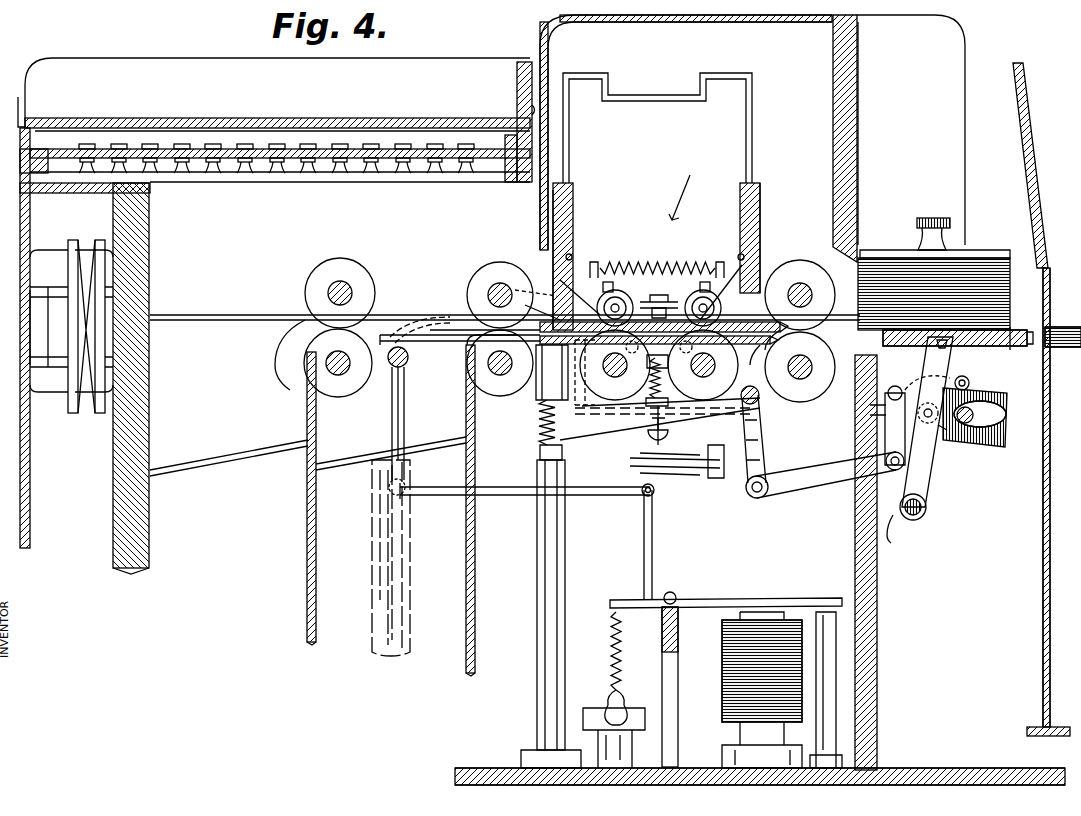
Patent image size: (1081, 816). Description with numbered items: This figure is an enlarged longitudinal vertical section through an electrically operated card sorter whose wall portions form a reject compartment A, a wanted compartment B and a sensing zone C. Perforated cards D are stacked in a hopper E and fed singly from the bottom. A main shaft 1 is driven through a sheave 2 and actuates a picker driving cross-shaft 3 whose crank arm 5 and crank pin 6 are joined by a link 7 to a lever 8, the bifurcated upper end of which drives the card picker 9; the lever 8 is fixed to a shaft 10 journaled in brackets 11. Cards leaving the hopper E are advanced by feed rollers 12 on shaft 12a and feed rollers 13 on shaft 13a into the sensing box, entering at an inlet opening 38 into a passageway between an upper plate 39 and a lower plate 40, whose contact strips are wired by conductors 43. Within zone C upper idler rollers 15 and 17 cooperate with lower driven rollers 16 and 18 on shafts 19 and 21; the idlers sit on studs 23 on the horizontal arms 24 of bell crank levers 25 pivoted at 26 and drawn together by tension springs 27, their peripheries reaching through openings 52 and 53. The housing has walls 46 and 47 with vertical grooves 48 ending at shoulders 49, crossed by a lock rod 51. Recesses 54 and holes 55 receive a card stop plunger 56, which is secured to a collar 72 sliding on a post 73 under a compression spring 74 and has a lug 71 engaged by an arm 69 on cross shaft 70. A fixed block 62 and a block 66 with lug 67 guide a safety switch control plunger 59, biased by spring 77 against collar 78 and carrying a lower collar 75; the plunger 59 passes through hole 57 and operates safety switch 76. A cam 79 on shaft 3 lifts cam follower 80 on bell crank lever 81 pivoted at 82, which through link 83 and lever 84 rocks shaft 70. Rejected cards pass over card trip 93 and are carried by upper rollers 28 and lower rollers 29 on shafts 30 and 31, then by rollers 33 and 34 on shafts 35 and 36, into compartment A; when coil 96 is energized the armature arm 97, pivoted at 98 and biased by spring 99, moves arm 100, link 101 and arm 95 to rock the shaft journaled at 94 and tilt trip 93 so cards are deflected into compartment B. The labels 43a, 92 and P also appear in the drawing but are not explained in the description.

The main shaft 1 is at (1068, 327).
The sheave 2 is at (68, 250).
The picker driving cross-shaft 3 is at (985, 430).
The crank arm 5 is at (972, 420).
The crank pin 6 is at (997, 416).
The link 7 is at (972, 400).
The lever 8 is at (925, 483).
The card picker 9 is at (1017, 330).
The shaft 10 is at (922, 513).
The brackets 11 is at (895, 528).
The feed rollers 12 is at (798, 268).
The shaft 12a is at (808, 297).
The feed rollers 13 is at (808, 392).
The shaft 13a is at (811, 368).
The upper idler rollers 15 is at (698, 303).
The lower driven rollers 16 is at (725, 398).
The upper idler rollers 17 is at (623, 303).
The lower driven rollers 18 is at (600, 405).
The shaft 19 is at (703, 365).
The shaft 21 is at (614, 365).
The studs 23 is at (659, 287).
The horizontal arms 24 is at (659, 293).
The bell crank levers 25 is at (596, 262).
The pivot 26 is at (658, 286).
The tension springs 27 is at (656, 265).
The upper rollers 28 is at (505, 268).
The lower driven rollers 29 is at (503, 392).
The shaft 30 is at (492, 290).
The shaft 31 is at (498, 372).
The upper rollers 33 is at (331, 270).
The driven rollers 34 is at (342, 392).
The shaft 35 is at (328, 294).
The shaft 36 is at (352, 366).
The inlet opening 38 is at (788, 362).
The upper plate 39 is at (790, 296).
The lower plate 40 is at (749, 355).
The wire conductors 43 is at (308, 173).
The flap heads 43a is at (432, 144).
The wall 46 is at (553, 206).
The wall 47 is at (761, 207).
The vertical grooves 48 is at (574, 198).
The horizontal shoulders 49 is at (770, 283).
The lock rod 51 is at (570, 255).
The openings 52 is at (662, 343).
The openings 53 is at (657, 360).
The recesses 54 is at (537, 307).
The holes 55 is at (512, 359).
The card stop plunger 56 is at (508, 366).
The hole 57 is at (656, 315).
The safety switch control plunger 59 is at (668, 430).
The fixed block 62 is at (650, 365).
The block 66 is at (647, 390).
The lug 67 is at (712, 416).
The arm 69 is at (660, 427).
The cross shaft 70 is at (759, 398).
The lug 71 is at (550, 408).
The collar 72 is at (540, 416).
The post 73 is at (548, 565).
The compression spring 74 is at (540, 448).
The lower fixed collar 75 is at (650, 418).
The safety switch 76 is at (640, 466).
The spring 77 is at (662, 392).
The collar 78 is at (664, 380).
The cam 79 is at (947, 432).
The cam follower 80 is at (966, 380).
The bell crank lever 81 is at (880, 431).
The pivot 82 is at (895, 386).
The link 83 is at (832, 478).
The lever 84 is at (764, 440).
The casing insert 92 is at (737, 73).
The card trip 93 is at (442, 332).
The cross shaft journal 94 is at (406, 368).
The arm 95 is at (404, 419).
The coil 96 is at (740, 660).
The rocking armature arm 97 is at (758, 600).
The pivot 98 is at (678, 618).
The spring 99 is at (610, 650).
The arm 100 is at (646, 521).
The link 101 is at (513, 495).
The hopper P is at (199, 150).
The reject compartment A is at (308, 435).
The wanted compartment B is at (391, 510).
The sensing zone C is at (698, 138).
The perforated cards D is at (960, 276).
The hopper E is at (911, 130).